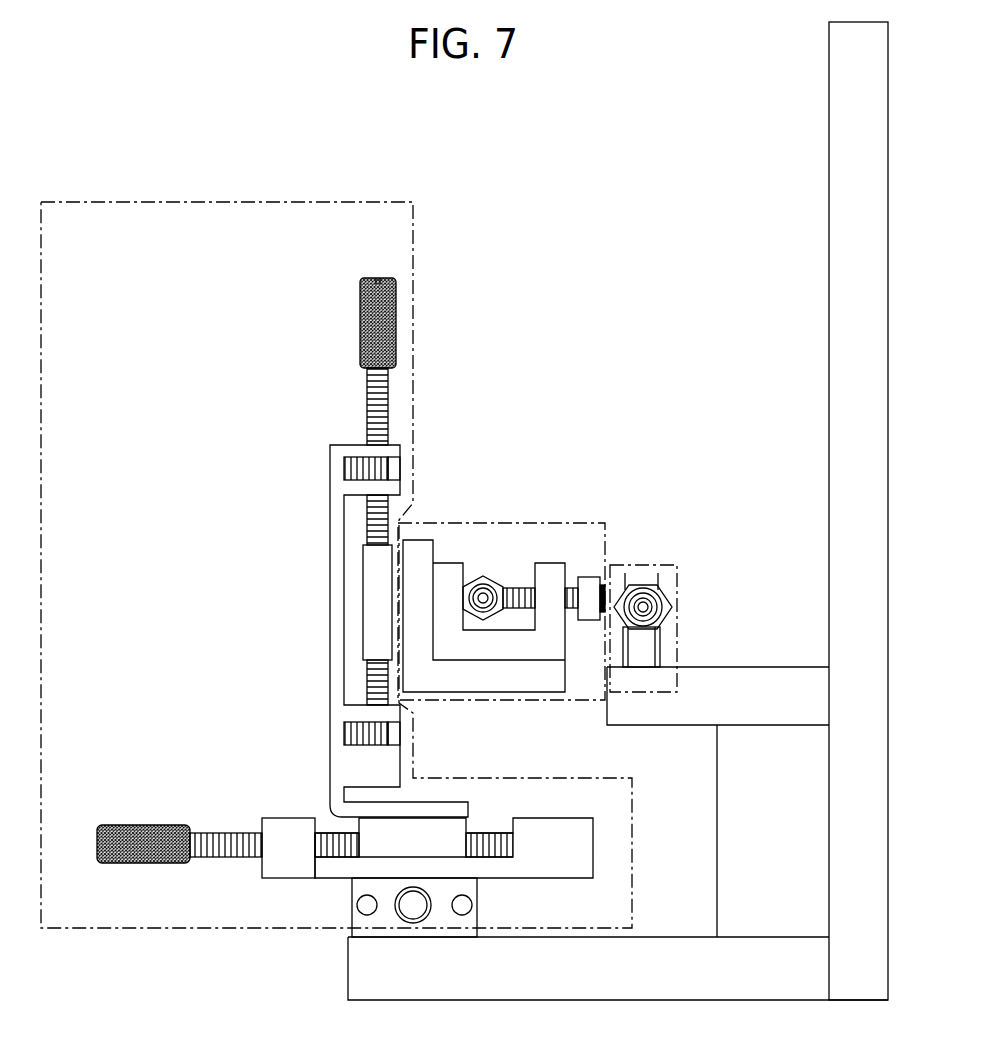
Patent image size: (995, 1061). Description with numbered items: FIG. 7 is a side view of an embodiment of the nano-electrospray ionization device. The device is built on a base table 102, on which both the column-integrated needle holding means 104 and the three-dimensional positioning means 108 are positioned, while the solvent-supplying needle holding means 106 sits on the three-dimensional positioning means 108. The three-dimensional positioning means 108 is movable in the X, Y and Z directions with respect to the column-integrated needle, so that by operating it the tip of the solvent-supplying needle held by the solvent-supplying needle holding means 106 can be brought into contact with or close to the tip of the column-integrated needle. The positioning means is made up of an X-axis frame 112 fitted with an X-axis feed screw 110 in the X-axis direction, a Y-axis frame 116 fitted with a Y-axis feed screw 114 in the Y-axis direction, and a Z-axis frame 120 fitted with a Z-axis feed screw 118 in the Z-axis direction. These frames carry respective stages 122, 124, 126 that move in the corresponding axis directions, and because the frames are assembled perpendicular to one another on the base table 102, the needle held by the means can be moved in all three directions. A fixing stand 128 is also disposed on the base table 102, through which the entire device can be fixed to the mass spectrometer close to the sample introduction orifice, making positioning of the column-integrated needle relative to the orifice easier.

The base table 102 is at (360, 975).
The column-integrated needle holding means 104 is at (648, 565).
The solvent-supplying needle holding means 106 is at (545, 525).
The three-dimensional positioning means 108 is at (288, 202).
The X-axis feed screw 110 is at (140, 825).
The X-axis frame 112 is at (278, 818).
The Y-axis feed screw 114 is at (395, 908).
The Y-axis frame 116 is at (470, 920).
The Z-axis feed screw 118 is at (360, 318).
The Z-axis frame 120 is at (330, 497).
The stage 122 is at (462, 828).
The stage 124 is at (462, 880).
The stage 126 is at (370, 590).
The fixing stand 128 is at (836, 265).